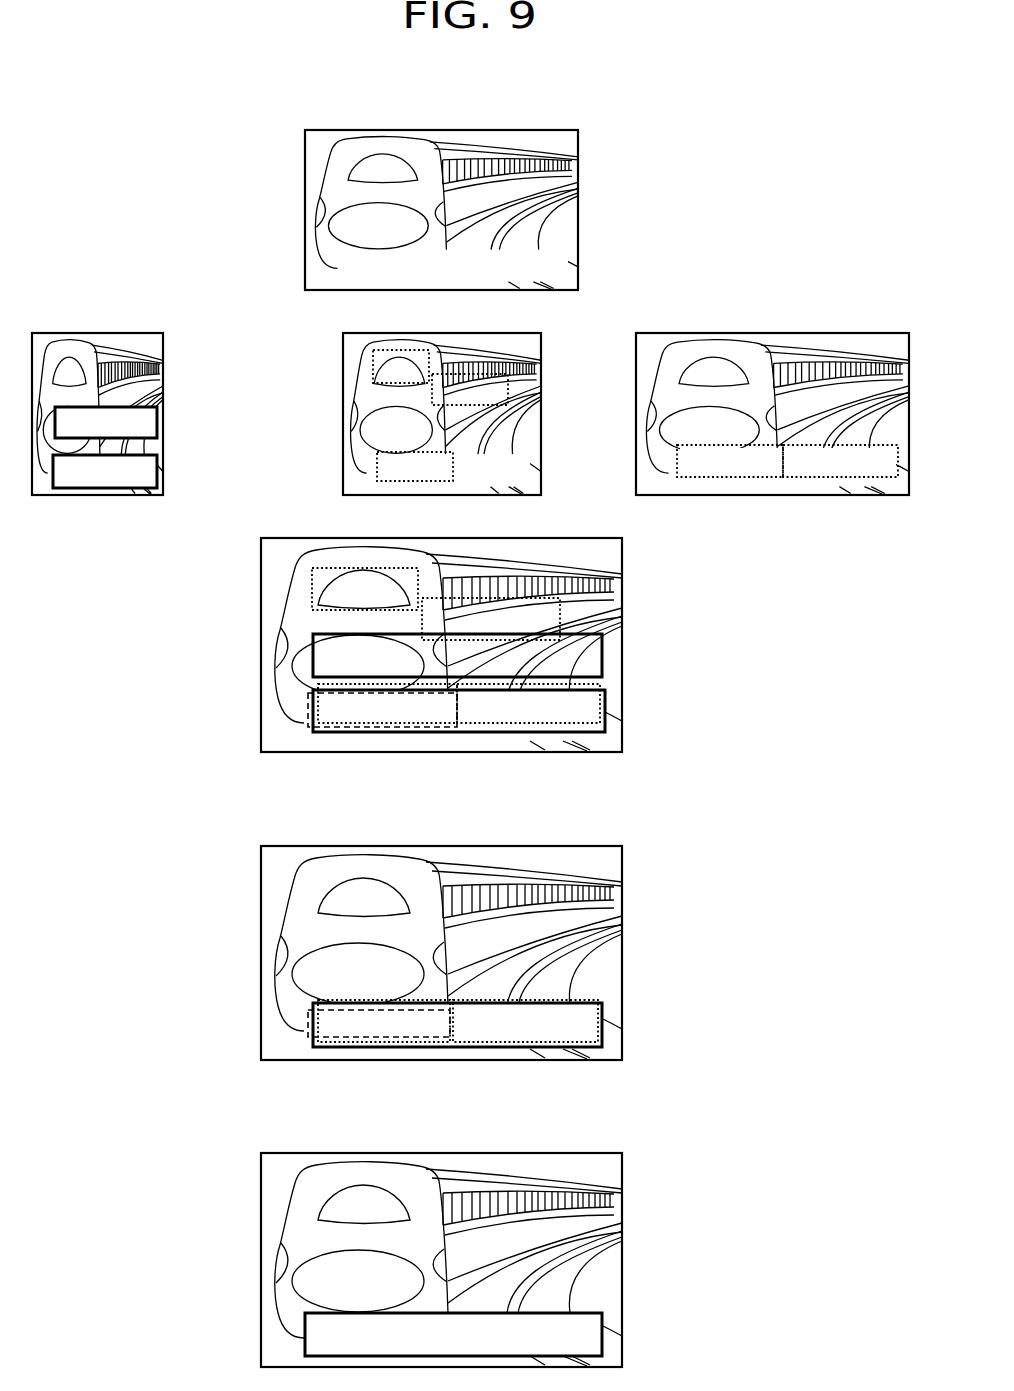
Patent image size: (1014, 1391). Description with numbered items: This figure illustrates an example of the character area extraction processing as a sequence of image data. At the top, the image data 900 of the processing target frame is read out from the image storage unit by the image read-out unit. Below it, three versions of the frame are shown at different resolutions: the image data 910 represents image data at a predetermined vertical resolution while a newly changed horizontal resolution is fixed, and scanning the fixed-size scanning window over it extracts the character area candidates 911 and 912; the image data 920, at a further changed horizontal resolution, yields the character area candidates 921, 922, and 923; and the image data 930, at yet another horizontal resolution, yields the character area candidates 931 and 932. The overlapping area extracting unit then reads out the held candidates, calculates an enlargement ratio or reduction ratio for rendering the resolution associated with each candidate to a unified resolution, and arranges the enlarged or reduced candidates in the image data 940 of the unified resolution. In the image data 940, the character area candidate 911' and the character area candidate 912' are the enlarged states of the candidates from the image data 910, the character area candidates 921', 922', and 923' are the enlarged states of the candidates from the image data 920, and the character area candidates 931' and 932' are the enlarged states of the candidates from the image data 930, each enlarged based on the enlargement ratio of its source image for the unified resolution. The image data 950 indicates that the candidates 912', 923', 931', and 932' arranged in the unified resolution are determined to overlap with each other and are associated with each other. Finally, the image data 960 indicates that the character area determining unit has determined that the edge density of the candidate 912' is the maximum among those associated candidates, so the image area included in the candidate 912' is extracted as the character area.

The image data 900 is at (505, 131).
The image data 910 is at (105, 333).
The character area candidate 911 is at (141, 422).
The character area candidate 912 is at (140, 472).
The image data 920 is at (468, 333).
The character area candidate 921 is at (355, 369).
The character area candidate 922 is at (395, 393).
The character area candidate 923 is at (367, 465).
The image data 930 is at (828, 333).
The character area candidate 931 is at (747, 496).
The character area candidate 932 is at (840, 496).
The image data 940 is at (548, 538).
The character area candidate 911' is at (504, 655).
The character area candidate 912' is at (500, 1023).
The character area candidate 921' is at (304, 589).
The character area candidate 922' is at (375, 623).
The character area candidate 923' is at (323, 871).
The character area candidate 931' is at (407, 898).
The character area candidate 932' is at (526, 898).
The image data 950 is at (548, 846).
The image data 960 is at (548, 1153).